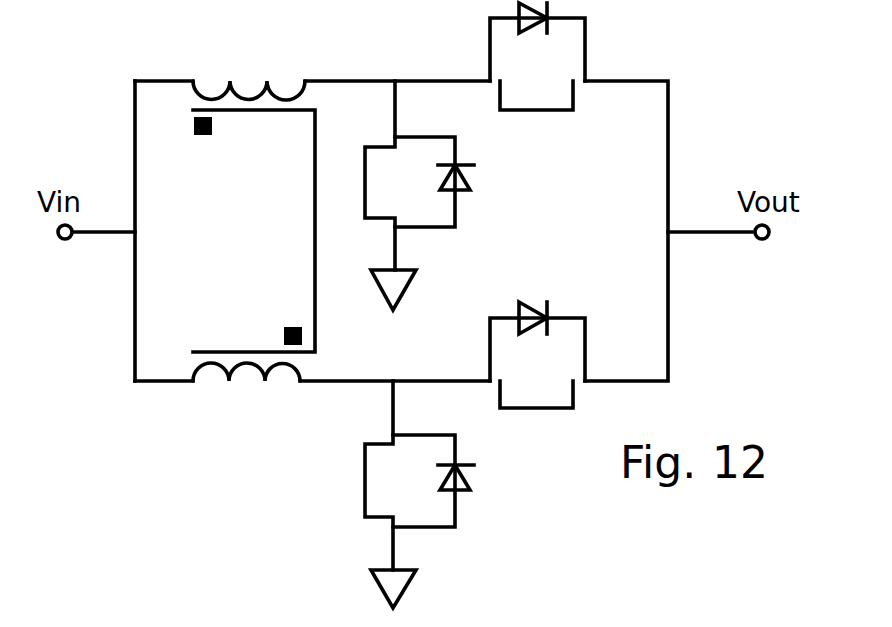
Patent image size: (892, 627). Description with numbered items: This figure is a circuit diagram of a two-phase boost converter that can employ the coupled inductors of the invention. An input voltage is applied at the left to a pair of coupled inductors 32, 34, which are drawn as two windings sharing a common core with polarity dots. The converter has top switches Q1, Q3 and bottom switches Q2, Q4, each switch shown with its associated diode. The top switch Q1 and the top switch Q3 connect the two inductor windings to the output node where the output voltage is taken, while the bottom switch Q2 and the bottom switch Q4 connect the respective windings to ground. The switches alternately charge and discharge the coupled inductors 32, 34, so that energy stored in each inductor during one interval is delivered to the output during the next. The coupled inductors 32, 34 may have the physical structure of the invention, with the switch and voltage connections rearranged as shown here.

The coupled inductor 32 is at (230, 82).
The coupled inductor 34 is at (265, 381).
The top switch Q1 is at (537, 56).
The bottom switch Q2 is at (419, 195).
The top switch Q3 is at (537, 355).
The bottom switch Q4 is at (419, 494).